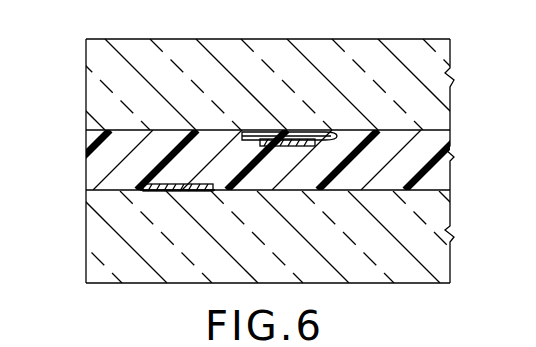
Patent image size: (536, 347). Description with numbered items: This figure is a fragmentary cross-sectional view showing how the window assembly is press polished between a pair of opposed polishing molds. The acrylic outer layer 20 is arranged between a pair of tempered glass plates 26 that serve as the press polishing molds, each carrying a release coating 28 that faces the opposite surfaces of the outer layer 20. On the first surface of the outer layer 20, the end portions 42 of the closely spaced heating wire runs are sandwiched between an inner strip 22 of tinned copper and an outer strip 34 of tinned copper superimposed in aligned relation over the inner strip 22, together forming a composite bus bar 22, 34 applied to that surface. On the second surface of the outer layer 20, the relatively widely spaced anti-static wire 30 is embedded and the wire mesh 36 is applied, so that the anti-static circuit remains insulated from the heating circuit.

The outer layer 20 is at (86, 165).
The inner strip of tinned copper 22 is at (313, 133).
The tempered glass plates 26 is at (86, 58).
The release coating 28 is at (436, 129).
The wire 30 is at (184, 186).
The outer strip of tinned copper 34 is at (278, 133).
The wire mesh 36 is at (165, 191).
The end portions 42 is at (248, 133).